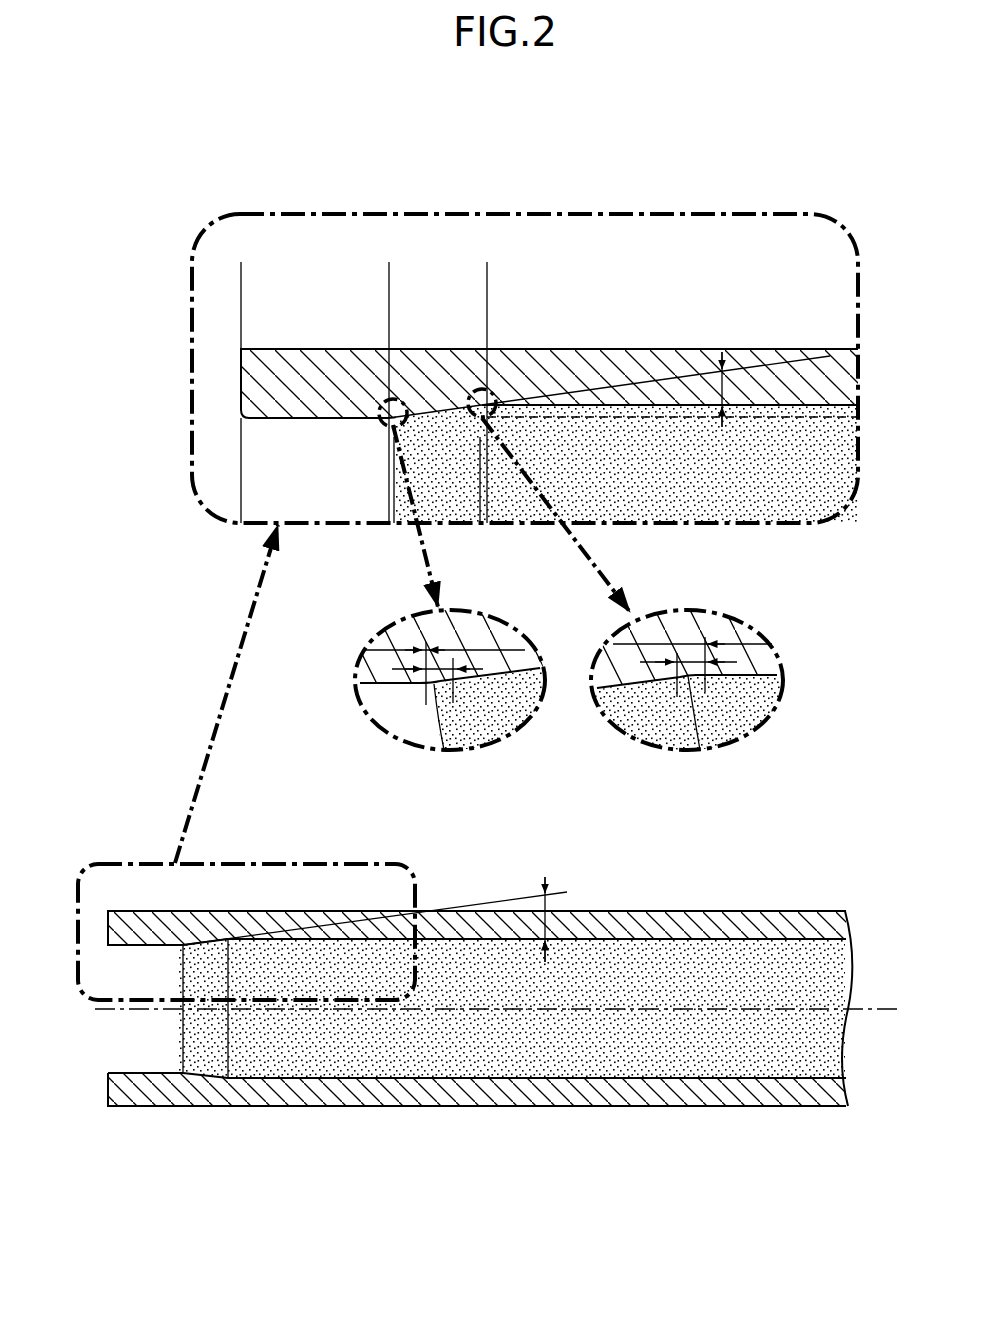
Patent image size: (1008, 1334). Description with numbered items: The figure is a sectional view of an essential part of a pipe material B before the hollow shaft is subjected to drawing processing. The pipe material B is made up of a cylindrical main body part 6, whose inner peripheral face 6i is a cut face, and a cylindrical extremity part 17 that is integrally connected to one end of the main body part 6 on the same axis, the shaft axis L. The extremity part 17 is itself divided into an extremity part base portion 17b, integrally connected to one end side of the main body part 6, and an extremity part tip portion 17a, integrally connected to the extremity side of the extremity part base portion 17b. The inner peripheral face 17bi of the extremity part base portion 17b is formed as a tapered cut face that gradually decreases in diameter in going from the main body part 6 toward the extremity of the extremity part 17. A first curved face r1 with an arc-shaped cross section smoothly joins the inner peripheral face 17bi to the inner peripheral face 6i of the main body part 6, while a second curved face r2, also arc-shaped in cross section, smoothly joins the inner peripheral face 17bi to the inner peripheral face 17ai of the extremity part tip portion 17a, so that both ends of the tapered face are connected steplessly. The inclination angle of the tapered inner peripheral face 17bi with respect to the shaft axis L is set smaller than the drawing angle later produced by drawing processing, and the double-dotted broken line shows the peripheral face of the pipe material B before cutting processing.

The extremity part 17 is at (241, 274).
The main body part 6 is at (487, 274).
The extremity part tip portion 17a is at (389, 323).
The extremity part base portion 17b is at (389, 323).
The inner peripheral face of the extremity part tip portion 17ai is at (279, 418).
The inner peripheral face of the extremity part base portion 17bi is at (425, 420).
The inner peripheral face of the main body part 6i is at (760, 406).
The first curved face r1 is at (492, 409).
The second curved face r2 is at (387, 428).
The shaft axis L is at (727, 1010).
The pipe material B is at (321, 1277).